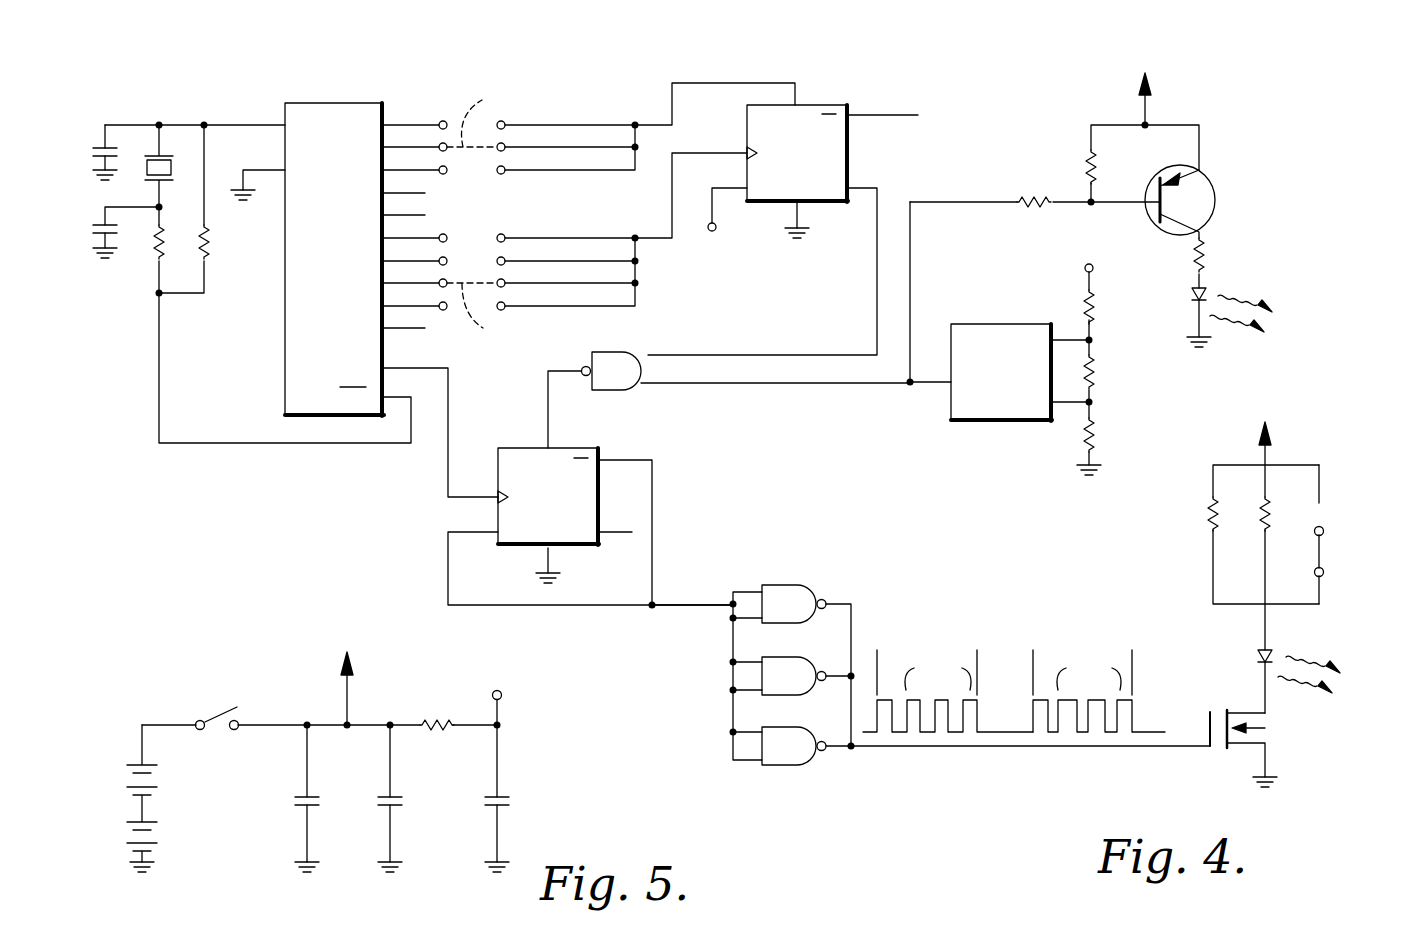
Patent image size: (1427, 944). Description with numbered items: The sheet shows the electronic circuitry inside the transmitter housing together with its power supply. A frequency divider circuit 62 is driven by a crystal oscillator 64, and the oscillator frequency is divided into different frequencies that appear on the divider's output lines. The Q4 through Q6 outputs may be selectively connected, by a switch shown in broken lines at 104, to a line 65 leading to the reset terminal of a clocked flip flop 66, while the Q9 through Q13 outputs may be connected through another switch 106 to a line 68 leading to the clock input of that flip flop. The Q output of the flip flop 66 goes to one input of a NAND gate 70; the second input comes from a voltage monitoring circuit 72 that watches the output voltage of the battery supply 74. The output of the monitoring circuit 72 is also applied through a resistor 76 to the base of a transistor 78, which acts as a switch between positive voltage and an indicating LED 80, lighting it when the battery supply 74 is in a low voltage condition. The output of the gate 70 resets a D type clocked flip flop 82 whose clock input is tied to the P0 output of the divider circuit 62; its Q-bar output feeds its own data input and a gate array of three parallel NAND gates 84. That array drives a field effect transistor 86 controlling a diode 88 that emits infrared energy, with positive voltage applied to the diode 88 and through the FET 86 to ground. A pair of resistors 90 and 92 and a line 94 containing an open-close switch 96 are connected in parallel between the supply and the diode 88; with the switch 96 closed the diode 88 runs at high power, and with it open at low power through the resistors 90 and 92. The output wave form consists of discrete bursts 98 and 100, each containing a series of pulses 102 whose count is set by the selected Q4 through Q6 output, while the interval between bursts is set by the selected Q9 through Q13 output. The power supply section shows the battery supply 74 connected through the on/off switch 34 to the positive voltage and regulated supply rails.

In FIG. 5, the on/off switch 34 is at (218, 718).
In FIG. 5, the frequency divider circuit 62 is at (325, 105).
In FIG. 5, the crystal oscillator 64 is at (165, 162).
In FIG. 5, the line 65 is at (693, 84).
In FIG. 5, the clocked flip flop 66 is at (808, 105).
In FIG. 5, the line 68 is at (670, 183).
In FIG. 5, the NAND gate 70 is at (622, 378).
In FIG. 5, the voltage monitoring circuit 72 is at (955, 330).
In FIG. 5, the battery supply 74 is at (118, 735).
In FIG. 5, the resistor 76 is at (1045, 200).
In FIG. 5, the transistor 78 is at (1215, 193).
In FIG. 5, the indicating LED 80 is at (1205, 290).
In FIG. 5, the D type clocked flip flop 82 is at (523, 455).
In FIG. 4, the NAND gates 84 is at (778, 598).
In FIG. 4, the field effect transistor 86 is at (1210, 746).
In FIG. 4, the diode 88 is at (1272, 650).
In FIG. 4, the resistor 90 is at (1213, 500).
In FIG. 4, the resistor 92 is at (1268, 495).
In FIG. 4, the line 94 is at (1323, 502).
In FIG. 4, the open-close switch 96 is at (1323, 555).
In FIG. 4, the burst 98 is at (928, 628).
In FIG. 4, the burst 100 is at (1078, 612).
In FIG. 4, the pulses 102 is at (1013, 673).
In FIG. 5, the switch 104 is at (484, 112).
In FIG. 5, the switch 106 is at (491, 319).